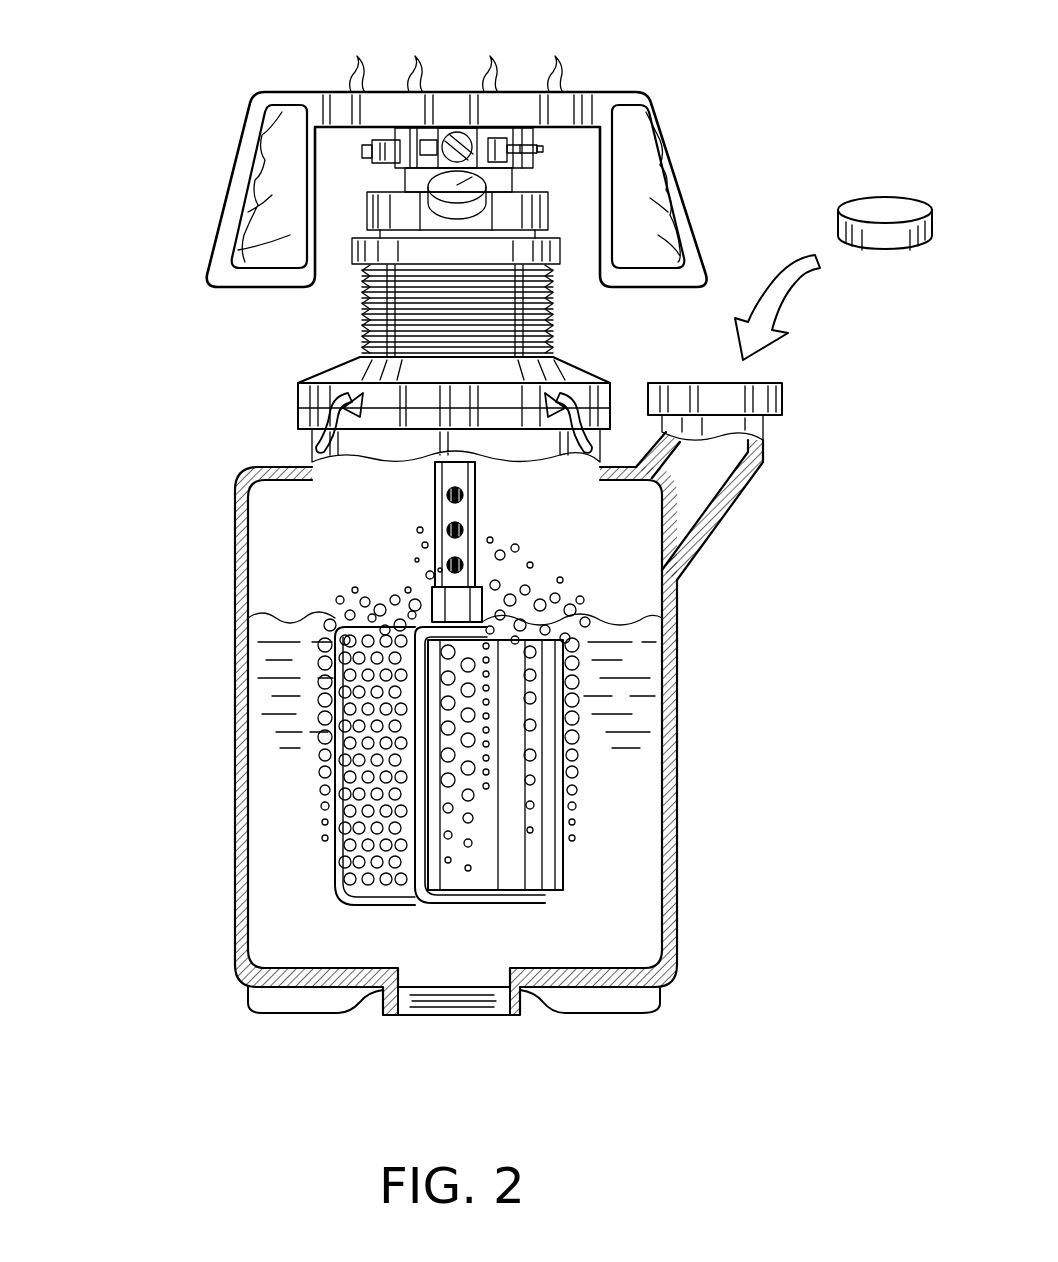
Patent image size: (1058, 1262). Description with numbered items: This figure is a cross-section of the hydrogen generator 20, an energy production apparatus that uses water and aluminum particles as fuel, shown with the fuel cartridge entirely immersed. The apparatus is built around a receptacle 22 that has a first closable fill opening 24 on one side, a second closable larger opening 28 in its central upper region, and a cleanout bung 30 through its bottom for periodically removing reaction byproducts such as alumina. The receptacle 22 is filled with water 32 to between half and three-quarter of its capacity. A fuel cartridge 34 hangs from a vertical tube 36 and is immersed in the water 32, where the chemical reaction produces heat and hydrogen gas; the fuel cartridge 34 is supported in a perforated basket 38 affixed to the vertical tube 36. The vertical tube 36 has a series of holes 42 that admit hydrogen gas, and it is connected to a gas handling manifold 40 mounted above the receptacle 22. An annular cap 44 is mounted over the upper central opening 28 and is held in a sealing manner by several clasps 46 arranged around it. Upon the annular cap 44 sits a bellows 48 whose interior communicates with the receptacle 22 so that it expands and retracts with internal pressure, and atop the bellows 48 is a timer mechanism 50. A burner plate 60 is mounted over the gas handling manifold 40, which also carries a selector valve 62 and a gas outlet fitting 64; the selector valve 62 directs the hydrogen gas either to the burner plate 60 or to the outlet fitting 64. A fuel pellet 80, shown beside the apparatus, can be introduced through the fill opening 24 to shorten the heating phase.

The hydrogen generator 20 is at (818, 103).
The receptacle 22 is at (680, 804).
The first closable fill opening 24 is at (783, 397).
The second closable larger opening 28 is at (298, 417).
The cleanout bung 30 is at (487, 1015).
The water 32 is at (586, 946).
The fuel cartridge 34 is at (572, 725).
The vertical tube 36 is at (432, 505).
The perforated basket 38 is at (335, 862).
The gas handling manifold 40 is at (395, 166).
The holes 42 is at (465, 528).
The annular cap 44 is at (320, 380).
The clasps 46 is at (316, 445).
The bellows 48 is at (365, 303).
The timer mechanism 50 is at (207, 250).
The burner plate 60 is at (383, 92).
The selector valve 62 is at (463, 133).
The gas outlet fitting 64 is at (530, 137).
The fuel pellet 80 is at (905, 198).